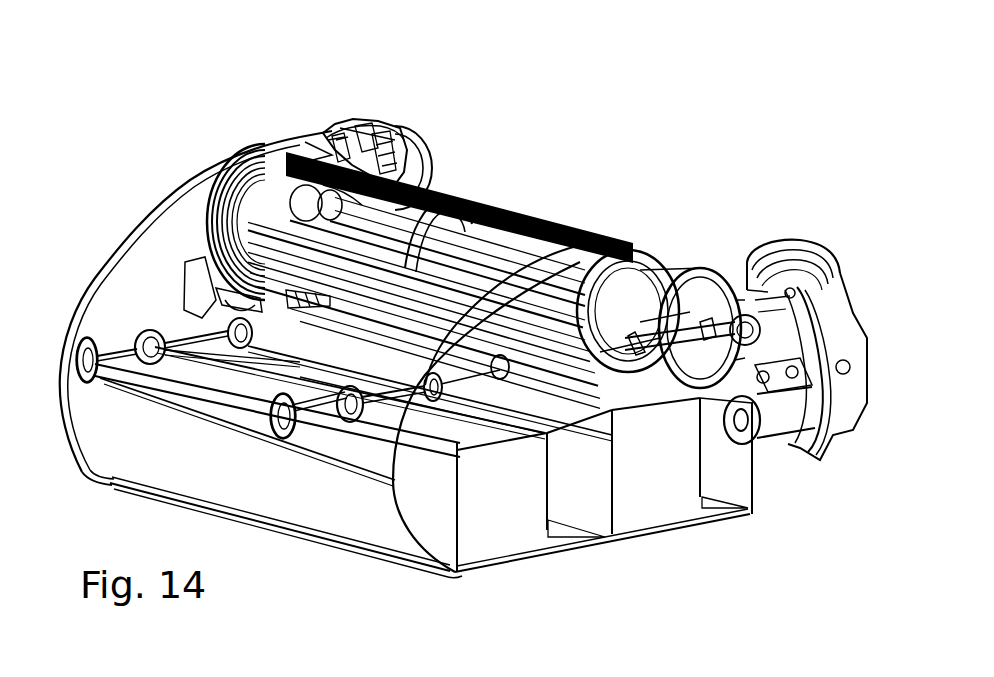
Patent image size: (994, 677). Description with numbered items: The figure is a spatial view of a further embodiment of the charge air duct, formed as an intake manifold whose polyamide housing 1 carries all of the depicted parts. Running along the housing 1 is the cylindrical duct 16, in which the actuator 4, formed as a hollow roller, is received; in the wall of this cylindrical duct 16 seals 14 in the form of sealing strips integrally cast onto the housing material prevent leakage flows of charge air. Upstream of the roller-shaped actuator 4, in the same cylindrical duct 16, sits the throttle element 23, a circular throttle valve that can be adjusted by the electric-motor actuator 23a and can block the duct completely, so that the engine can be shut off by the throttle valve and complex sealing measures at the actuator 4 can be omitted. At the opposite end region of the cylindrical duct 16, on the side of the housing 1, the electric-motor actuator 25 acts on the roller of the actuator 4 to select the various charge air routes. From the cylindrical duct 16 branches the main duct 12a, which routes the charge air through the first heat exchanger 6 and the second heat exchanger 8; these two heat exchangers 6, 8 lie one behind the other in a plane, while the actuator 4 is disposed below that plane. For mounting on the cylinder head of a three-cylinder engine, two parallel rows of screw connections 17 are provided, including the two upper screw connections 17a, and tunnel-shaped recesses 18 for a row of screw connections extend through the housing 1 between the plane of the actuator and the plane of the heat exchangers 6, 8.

The housing 1 is at (142, 136).
The actuator 4 is at (634, 256).
The first heat exchanger 6 is at (485, 523).
The second heat exchanger 8 is at (653, 490).
The main duct 12a is at (143, 260).
The seals 14 is at (570, 527).
The cylindrical duct 16 is at (687, 267).
The screw connections 17 is at (276, 418).
The tunnel-shaped recesses 18 is at (373, 379).
The upper screw connections 17a is at (270, 393).
The throttle element 23 is at (760, 436).
The electric-motor actuator 23a is at (817, 250).
The electric-motor actuator 25 is at (378, 126).